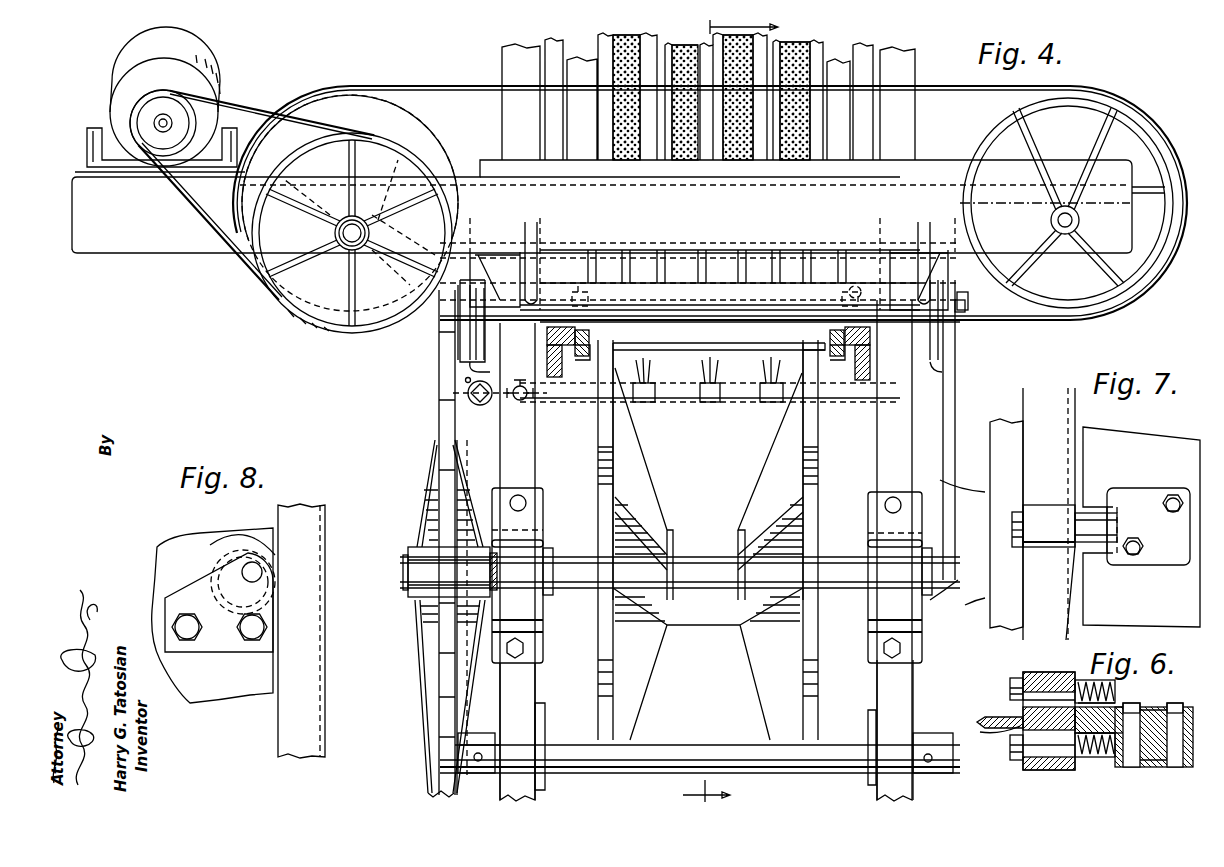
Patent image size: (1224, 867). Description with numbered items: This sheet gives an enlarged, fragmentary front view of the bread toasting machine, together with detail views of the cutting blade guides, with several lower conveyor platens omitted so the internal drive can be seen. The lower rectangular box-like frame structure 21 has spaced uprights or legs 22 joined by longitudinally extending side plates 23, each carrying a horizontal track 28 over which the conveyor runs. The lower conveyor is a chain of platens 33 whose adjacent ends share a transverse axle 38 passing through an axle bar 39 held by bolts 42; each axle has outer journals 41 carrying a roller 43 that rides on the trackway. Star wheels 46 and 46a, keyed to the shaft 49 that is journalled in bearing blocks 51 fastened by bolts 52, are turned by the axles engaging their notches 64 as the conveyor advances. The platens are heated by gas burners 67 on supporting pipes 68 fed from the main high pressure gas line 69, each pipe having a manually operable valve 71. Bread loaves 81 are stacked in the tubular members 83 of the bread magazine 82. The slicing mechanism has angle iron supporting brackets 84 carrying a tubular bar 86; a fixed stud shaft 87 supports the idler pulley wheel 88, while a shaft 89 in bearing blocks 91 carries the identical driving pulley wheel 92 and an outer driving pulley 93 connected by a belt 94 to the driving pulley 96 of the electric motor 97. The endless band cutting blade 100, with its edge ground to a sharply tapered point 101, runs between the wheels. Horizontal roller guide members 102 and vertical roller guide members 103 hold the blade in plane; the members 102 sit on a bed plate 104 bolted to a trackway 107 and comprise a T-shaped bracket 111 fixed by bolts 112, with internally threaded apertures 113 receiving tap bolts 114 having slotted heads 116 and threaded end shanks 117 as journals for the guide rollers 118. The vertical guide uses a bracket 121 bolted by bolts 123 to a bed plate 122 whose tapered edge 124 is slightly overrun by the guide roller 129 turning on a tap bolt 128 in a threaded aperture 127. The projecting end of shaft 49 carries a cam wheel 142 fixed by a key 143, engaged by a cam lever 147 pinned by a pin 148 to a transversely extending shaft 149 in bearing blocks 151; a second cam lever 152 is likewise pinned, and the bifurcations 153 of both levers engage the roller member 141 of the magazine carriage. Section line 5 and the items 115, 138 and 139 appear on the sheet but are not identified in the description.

In FIG. 4, the section line 5 is at (738, 411).
In FIG. 4, the lower rectangular box-like frame structure 21 is at (482, 795).
In FIG. 6, the lower rectangular box-like frame structure 21 is at (965, 792).
In FIG. 4, the uprights or legs 22 is at (520, 725).
In FIG. 4, the side plates 23 is at (545, 408).
In FIG. 4, the horizontal track 28 is at (560, 380).
In FIG. 4, the platens 33 is at (693, 343).
In FIG. 4, the axle 38 is at (757, 343).
In FIG. 4, the axle bar 39 is at (580, 346).
In FIG. 4, the journals 41 is at (547, 350).
In FIG. 4, the bolts 42 is at (584, 358).
In FIG. 4, the roller 43 is at (540, 322).
In FIG. 4, the star wheel 46 is at (598, 520).
In FIG. 4, the star wheel 46a is at (818, 545).
In FIG. 4, the shaft 49 is at (703, 555).
In FIG. 4, the bearing blocks 51 is at (530, 648).
In FIG. 4, the bolts 52 is at (518, 495).
In FIG. 4, the notches 64 is at (613, 470).
In FIG. 4, the gas burners 67 is at (770, 403).
In FIG. 4, the supporting pipe 68 is at (674, 403).
In FIG. 4, the main high pressure gas line 69 is at (481, 406).
In FIG. 4, the manually operable valve 71 is at (468, 380).
In FIG. 4, the bread loaves 81 is at (680, 160).
In FIG. 4, the bread magazine 82 is at (922, 73).
In FIG. 4, the tubular members 83 is at (830, 56).
In FIG. 4, the angle iron supporting brackets 84 is at (523, 232).
In FIG. 4, the tubular bar 86 is at (133, 253).
In FIG. 4, the fixed stud shaft 87 is at (1069, 236).
In FIG. 4, the idler pulley wheel 88 is at (1160, 245).
In FIG. 4, the shaft 89 is at (345, 248).
In FIG. 4, the bearing blocks 91 is at (385, 210).
In FIG. 4, the driving pulley wheel 92 is at (442, 128).
In FIG. 4, the driving pulley 93 is at (318, 313).
In FIG. 4, the belt 94 is at (255, 100).
In FIG. 4, the driving pulley 96 is at (178, 150).
In FIG. 4, the electric motor 97 is at (116, 64).
In FIG. 4, the endless band cutting blade 100 is at (415, 86).
In FIG. 7, the endless band cutting blade 100 is at (1050, 388).
In FIG. 8, the endless band cutting blade 100 is at (296, 760).
In FIG. 6, the endless band cutting blade 100 is at (1049, 717).
In FIG. 4, the sharply tapered point 101 is at (438, 760).
In FIG. 7, the sharply tapered point 101 is at (1072, 420).
In FIG. 8, the sharply tapered point 101 is at (328, 745).
In FIG. 6, the sharply tapered point 101 is at (1000, 650).
In FIG. 4, the horizontal roller guide members 102 is at (572, 230).
In FIG. 6, the horizontal roller guide members 102 is at (1115, 767).
In FIG. 4, the vertical roller guide members 103 is at (586, 292).
In FIG. 8, the vertical roller guide members 103 is at (258, 518).
In FIG. 4, the bed plate 104 is at (973, 609).
In FIG. 7, the bed plate 104 is at (1155, 442).
In FIG. 6, the bed plate 104 is at (1162, 767).
In FIG. 4, the trackway 107 is at (465, 330).
In FIG. 7, the T-shaped bracket 111 is at (1158, 560).
In FIG. 6, the T-shaped bracket 111 is at (1152, 710).
In FIG. 7, the bolts 112 is at (1133, 540).
In FIG. 6, the bolts 112 is at (1131, 703).
In FIG. 6, the internally threaded apertures 113 is at (1090, 680).
In FIG. 4, the tap bolts 114 is at (975, 585).
In FIG. 7, the tap bolts 114 is at (1015, 548).
In FIG. 6, the tap bolts 114 is at (1010, 690).
In FIG. 4, the nut 115 is at (966, 482).
In FIG. 7, the nut 115 is at (1012, 512).
In FIG. 6, the slotted heads 116 is at (1014, 678).
In FIG. 6, the threaded end shanks 117 is at (1102, 724).
In FIG. 7, the guide rollers 118 is at (1047, 505).
In FIG. 6, the guide rollers 118 is at (1038, 672).
In FIG. 8, the bracket 121 is at (228, 652).
In FIG. 8, the bed plate 122 is at (190, 705).
In FIG. 6, the bed plate 122 is at (1000, 713).
In FIG. 8, the bolts 123 is at (240, 615).
In FIG. 6, the tapered edge 124 is at (989, 732).
In FIG. 8, the internally threaded aperture 127 is at (244, 573).
In FIG. 8, the tap bolt 128 is at (250, 560).
In FIG. 8, the guide roller 129 is at (262, 548).
In FIG. 4, the rod 138 is at (468, 366).
In FIG. 7, the rod 138 is at (998, 375).
In FIG. 4, the nut 139 is at (965, 308).
In FIG. 4, the roller member 141 is at (478, 252).
In FIG. 4, the cam wheel 142 is at (439, 428).
In FIG. 4, the key 143 is at (439, 470).
In FIG. 4, the cam lever 147 is at (465, 383).
In FIG. 4, the pin 148 is at (474, 756).
In FIG. 6, the pin 148 is at (1010, 700).
In FIG. 4, the transversely extending shaft 149 is at (675, 745).
In FIG. 4, the bearing blocks 151 is at (494, 733).
In FIG. 4, the second cam lever 152 is at (955, 408).
In FIG. 7, the second cam lever 152 is at (993, 403).
In FIG. 4, the bifurcations 153 is at (462, 286).